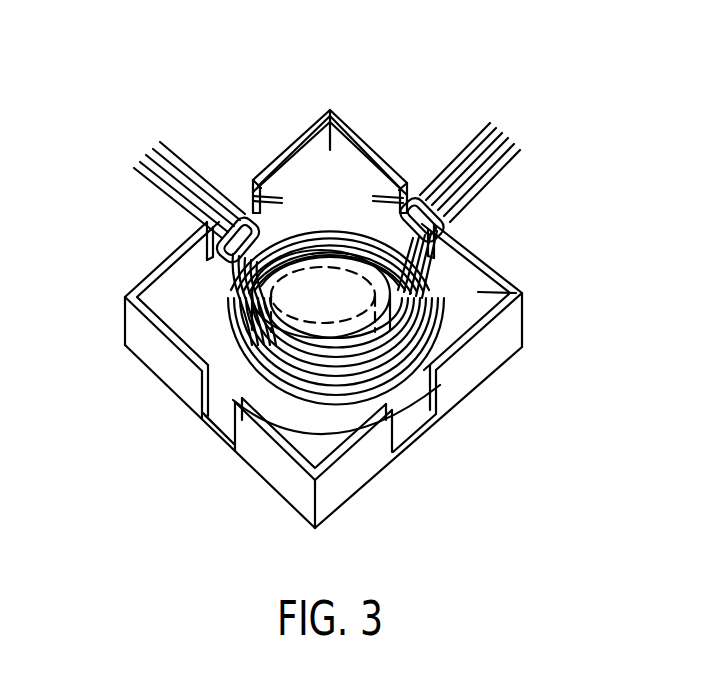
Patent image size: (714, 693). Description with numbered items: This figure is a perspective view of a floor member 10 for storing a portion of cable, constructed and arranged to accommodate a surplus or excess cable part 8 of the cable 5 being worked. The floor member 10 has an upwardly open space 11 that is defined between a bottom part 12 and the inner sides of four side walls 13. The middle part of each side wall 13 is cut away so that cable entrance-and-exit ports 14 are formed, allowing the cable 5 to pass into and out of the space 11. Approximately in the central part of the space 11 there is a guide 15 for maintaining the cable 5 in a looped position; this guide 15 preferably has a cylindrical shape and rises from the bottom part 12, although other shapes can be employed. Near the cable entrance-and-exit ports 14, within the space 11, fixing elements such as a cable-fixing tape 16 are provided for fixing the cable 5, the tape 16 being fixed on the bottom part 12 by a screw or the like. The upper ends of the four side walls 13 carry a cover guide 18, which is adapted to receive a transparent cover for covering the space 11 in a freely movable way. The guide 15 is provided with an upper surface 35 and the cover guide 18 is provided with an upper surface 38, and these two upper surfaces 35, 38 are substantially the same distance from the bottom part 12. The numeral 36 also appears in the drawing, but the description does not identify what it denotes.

The cable 5 is at (480, 187).
The surplus cable part 8 is at (358, 233).
The floor member 10 is at (357, 96).
The upwardly open space 11 is at (203, 325).
The bottom part 12 is at (218, 433).
The side wall 13 is at (267, 462).
The cable entrance-and-exit port 14 is at (247, 200).
The guide 15 is at (305, 258).
The cable-fixing tape 16 is at (198, 215).
The cover guide 18 is at (312, 157).
The upper surface of guide 35 is at (320, 310).
The core bore 36 is at (370, 328).
The upper surface of cover guide 38 is at (332, 110).